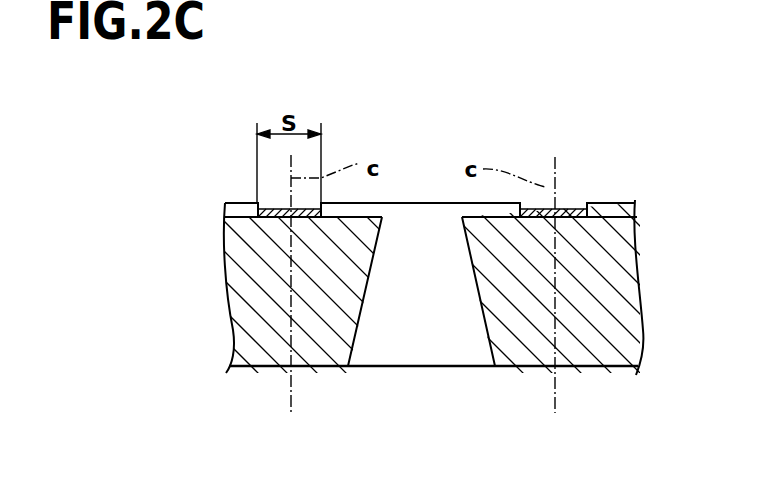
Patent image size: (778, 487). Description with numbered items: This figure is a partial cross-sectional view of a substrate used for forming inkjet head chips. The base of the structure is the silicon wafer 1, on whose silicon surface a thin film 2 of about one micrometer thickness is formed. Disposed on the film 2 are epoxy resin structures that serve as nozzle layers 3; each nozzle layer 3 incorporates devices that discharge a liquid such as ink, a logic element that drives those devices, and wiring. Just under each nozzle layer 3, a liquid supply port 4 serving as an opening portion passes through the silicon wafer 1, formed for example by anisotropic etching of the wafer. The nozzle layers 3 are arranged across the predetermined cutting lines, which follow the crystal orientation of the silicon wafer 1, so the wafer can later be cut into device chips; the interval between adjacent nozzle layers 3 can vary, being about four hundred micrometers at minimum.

The silicon wafer 1 is at (608, 358).
The film 2 is at (568, 208).
The nozzle layer 3 is at (248, 202).
The liquid supply port 4 is at (431, 353).